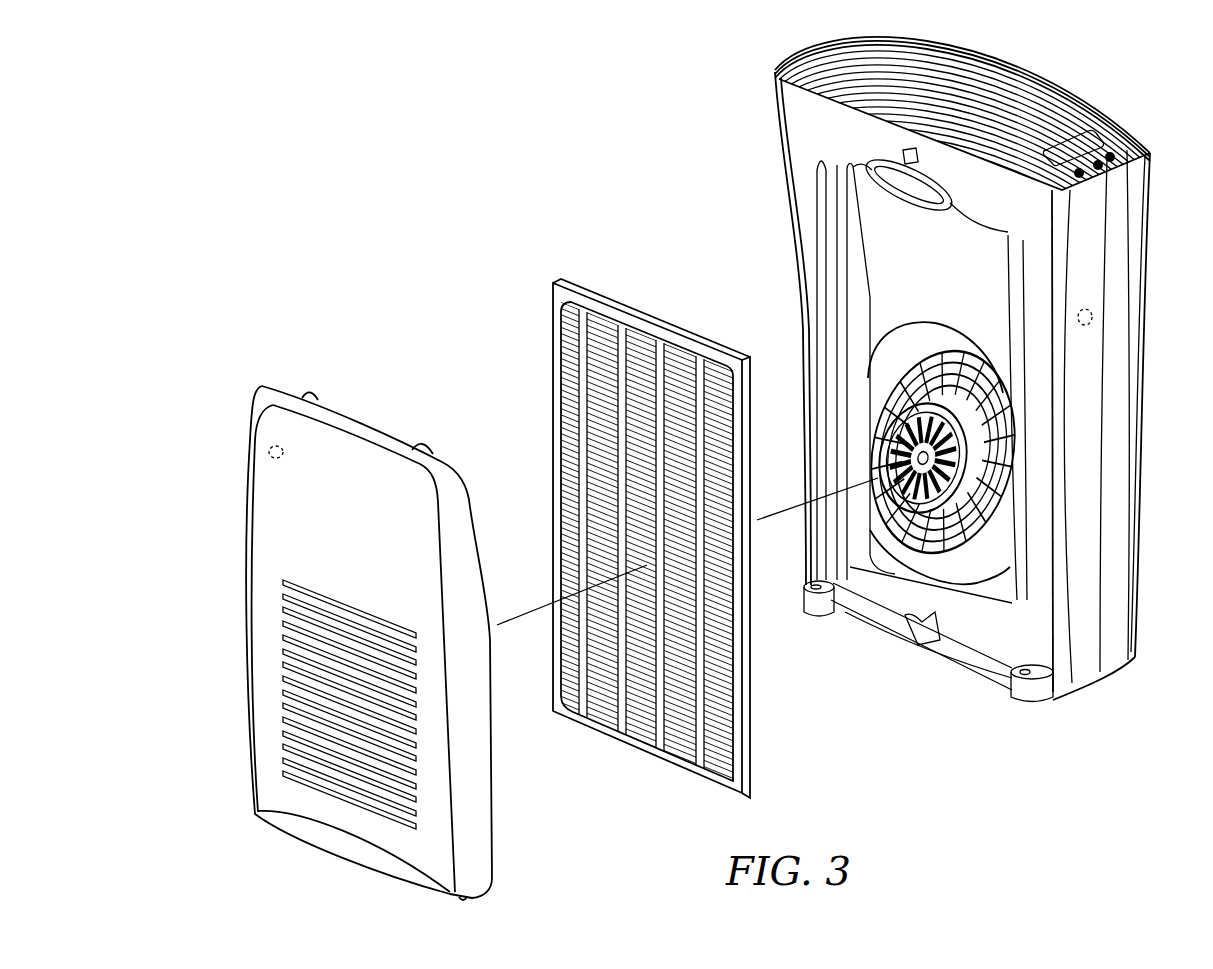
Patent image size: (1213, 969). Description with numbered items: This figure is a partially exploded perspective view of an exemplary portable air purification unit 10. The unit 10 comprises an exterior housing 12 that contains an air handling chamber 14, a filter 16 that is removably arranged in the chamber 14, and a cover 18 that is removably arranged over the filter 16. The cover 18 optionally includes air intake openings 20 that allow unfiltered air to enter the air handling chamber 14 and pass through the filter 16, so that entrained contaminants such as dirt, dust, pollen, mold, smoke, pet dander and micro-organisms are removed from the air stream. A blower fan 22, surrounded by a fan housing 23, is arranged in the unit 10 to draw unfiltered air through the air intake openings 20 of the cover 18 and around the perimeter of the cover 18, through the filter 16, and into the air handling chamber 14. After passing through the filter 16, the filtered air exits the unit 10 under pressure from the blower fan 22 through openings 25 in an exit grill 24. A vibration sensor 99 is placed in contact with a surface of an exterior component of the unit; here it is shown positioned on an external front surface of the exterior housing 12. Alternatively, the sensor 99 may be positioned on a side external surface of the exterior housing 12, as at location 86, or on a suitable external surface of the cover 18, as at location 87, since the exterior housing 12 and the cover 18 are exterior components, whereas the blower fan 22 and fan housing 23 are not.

The portable air purification unit 10 is at (370, 219).
The exterior housing 12 is at (1125, 238).
The air handling chamber 14 is at (873, 210).
The filter 16 is at (598, 394).
The cover 18 is at (268, 556).
The air intake openings 20 is at (288, 667).
The blower fan 22 is at (920, 462).
The fan housing 23 is at (997, 388).
The exit grill 24 is at (1017, 67).
The openings 25 is at (1067, 98).
The location 86 is at (1092, 318).
The location 87 is at (272, 456).
The vibration sensor 99 is at (900, 152).